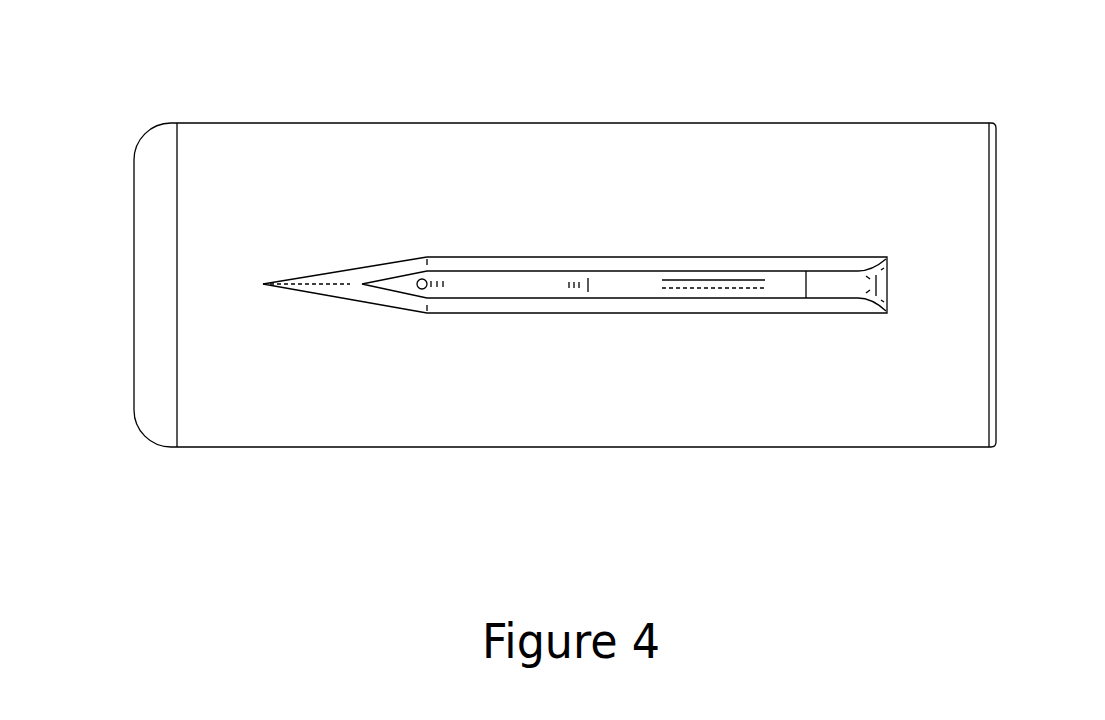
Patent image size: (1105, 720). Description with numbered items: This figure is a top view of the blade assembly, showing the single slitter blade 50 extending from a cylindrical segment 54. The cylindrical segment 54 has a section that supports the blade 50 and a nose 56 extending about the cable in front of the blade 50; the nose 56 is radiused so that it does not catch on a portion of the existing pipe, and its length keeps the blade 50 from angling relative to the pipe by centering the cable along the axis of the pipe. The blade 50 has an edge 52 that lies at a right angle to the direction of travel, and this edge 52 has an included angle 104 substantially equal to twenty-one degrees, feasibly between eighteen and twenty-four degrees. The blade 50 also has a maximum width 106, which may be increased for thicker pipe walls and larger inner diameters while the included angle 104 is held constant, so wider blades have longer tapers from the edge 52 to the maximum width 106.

The slitter blade 50 is at (657, 171).
The edge 52 is at (303, 405).
The cylindrical segment 54 is at (583, 248).
The nose 56 is at (104, 235).
The included angle 104 is at (330, 156).
The maximum width 106 is at (955, 240).